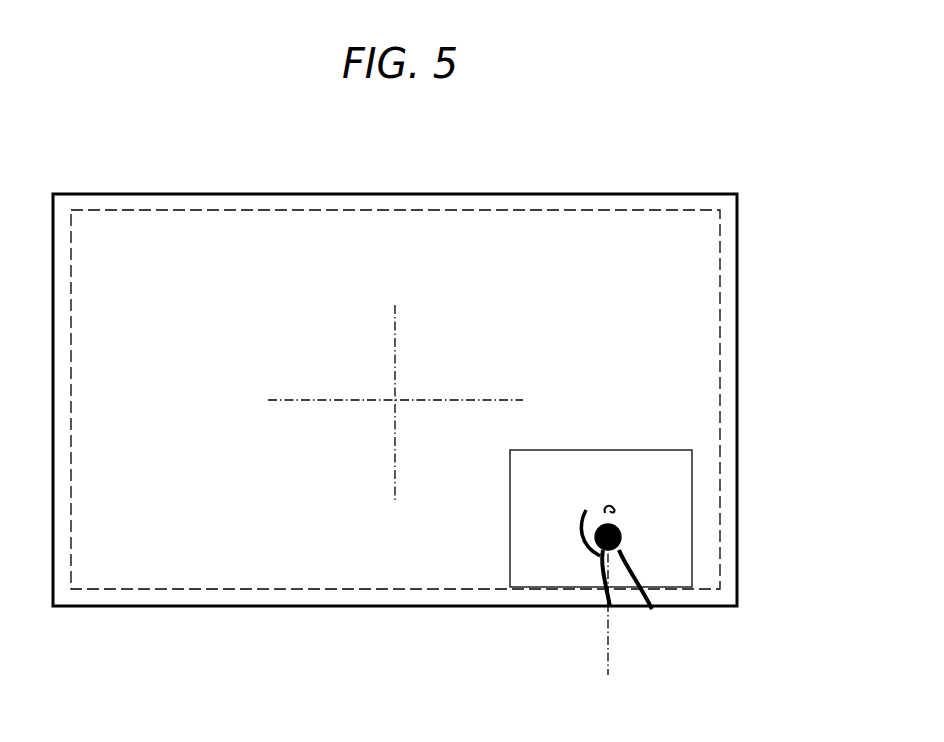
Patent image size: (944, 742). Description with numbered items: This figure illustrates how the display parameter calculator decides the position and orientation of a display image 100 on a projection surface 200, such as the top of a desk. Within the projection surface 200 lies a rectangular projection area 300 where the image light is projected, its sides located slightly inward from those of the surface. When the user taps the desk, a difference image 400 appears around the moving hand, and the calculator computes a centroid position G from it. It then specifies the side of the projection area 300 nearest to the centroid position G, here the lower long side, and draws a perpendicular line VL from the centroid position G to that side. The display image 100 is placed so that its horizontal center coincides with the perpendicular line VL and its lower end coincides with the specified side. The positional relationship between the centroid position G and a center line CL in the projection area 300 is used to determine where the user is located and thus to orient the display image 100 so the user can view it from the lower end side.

The projection surface 200 is at (449, 193).
The projection area 300 is at (678, 210).
The center line CL is at (461, 399).
The display image 100 is at (608, 450).
The difference image 400 is at (612, 509).
The centroid position G is at (621, 540).
The perpendicular line VL is at (610, 632).